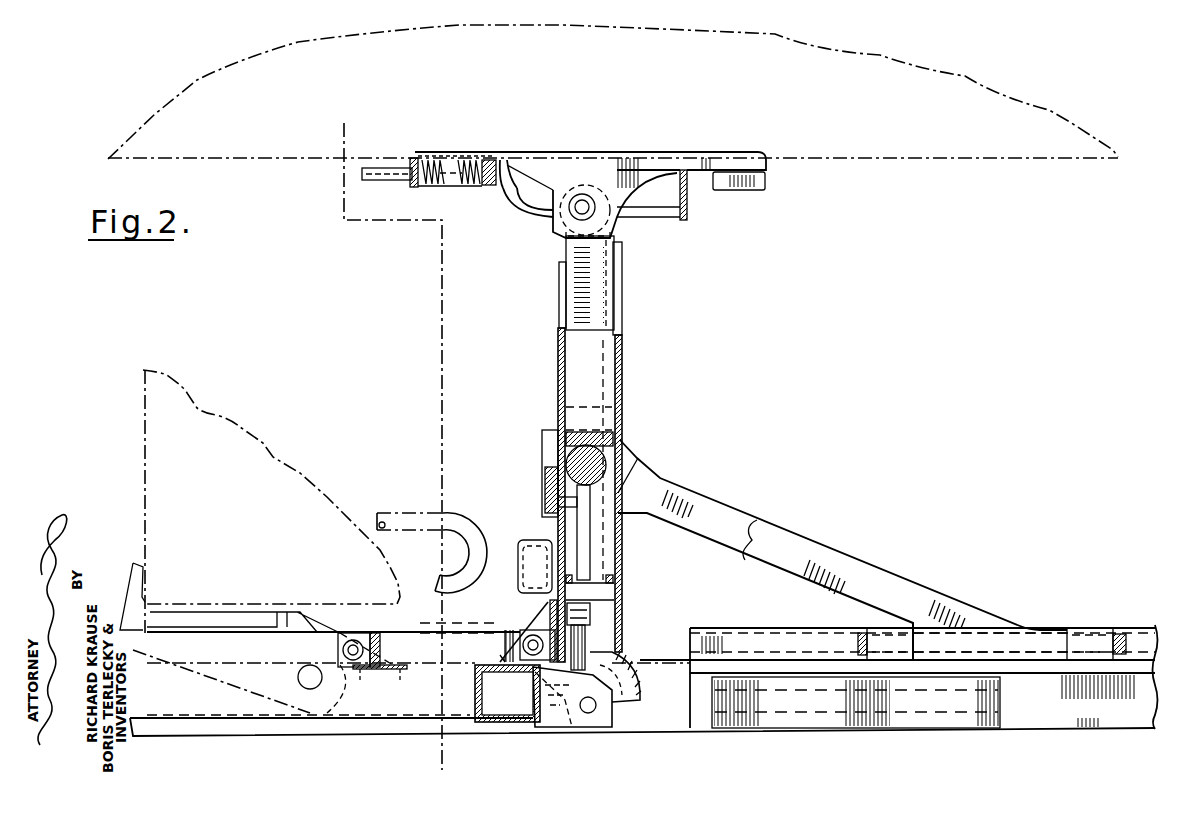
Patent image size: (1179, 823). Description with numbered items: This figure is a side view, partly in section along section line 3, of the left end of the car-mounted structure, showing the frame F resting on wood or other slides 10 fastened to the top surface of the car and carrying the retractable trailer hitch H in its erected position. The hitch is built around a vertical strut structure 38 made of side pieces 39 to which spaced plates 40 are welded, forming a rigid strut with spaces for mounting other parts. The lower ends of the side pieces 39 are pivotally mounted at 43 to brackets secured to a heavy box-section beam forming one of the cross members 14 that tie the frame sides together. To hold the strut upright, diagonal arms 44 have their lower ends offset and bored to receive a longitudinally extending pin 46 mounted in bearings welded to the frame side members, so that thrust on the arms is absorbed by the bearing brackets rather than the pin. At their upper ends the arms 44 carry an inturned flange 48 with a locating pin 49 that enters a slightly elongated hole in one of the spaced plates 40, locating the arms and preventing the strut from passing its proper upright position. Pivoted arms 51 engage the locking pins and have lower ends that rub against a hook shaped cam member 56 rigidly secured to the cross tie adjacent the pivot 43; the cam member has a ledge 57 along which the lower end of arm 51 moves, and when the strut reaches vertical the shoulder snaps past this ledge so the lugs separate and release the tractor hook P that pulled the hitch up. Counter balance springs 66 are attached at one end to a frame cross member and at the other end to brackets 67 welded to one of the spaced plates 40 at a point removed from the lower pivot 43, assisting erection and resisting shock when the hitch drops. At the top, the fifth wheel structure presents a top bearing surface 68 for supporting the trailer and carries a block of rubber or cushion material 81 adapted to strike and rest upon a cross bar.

The section line 3- 3 is at (342, 128).
The slides 10 is at (1120, 730).
The cross members 14 is at (478, 690).
The vertical strut structure 38 is at (622, 400).
The side pieces 39 is at (563, 243).
The spaced plates 40 is at (560, 300).
The pivot 43 is at (588, 713).
The diagonal arms 44 is at (790, 528).
The longitudinally extending pin 46 is at (860, 640).
The inturned flange 48 is at (548, 516).
The locating pin 49 is at (560, 541).
The arms 51 is at (612, 618).
The hook shaped cam member 56 is at (633, 680).
The ledge 57 is at (602, 660).
The counter balance springs 66 is at (500, 642).
The brackets 67 is at (543, 626).
The top bearing surface 68 is at (745, 151).
The block of rubber or cushion material 81 is at (743, 190).
The trailer hitch H is at (622, 365).
The hook P is at (400, 515).
The frame F is at (1135, 628).